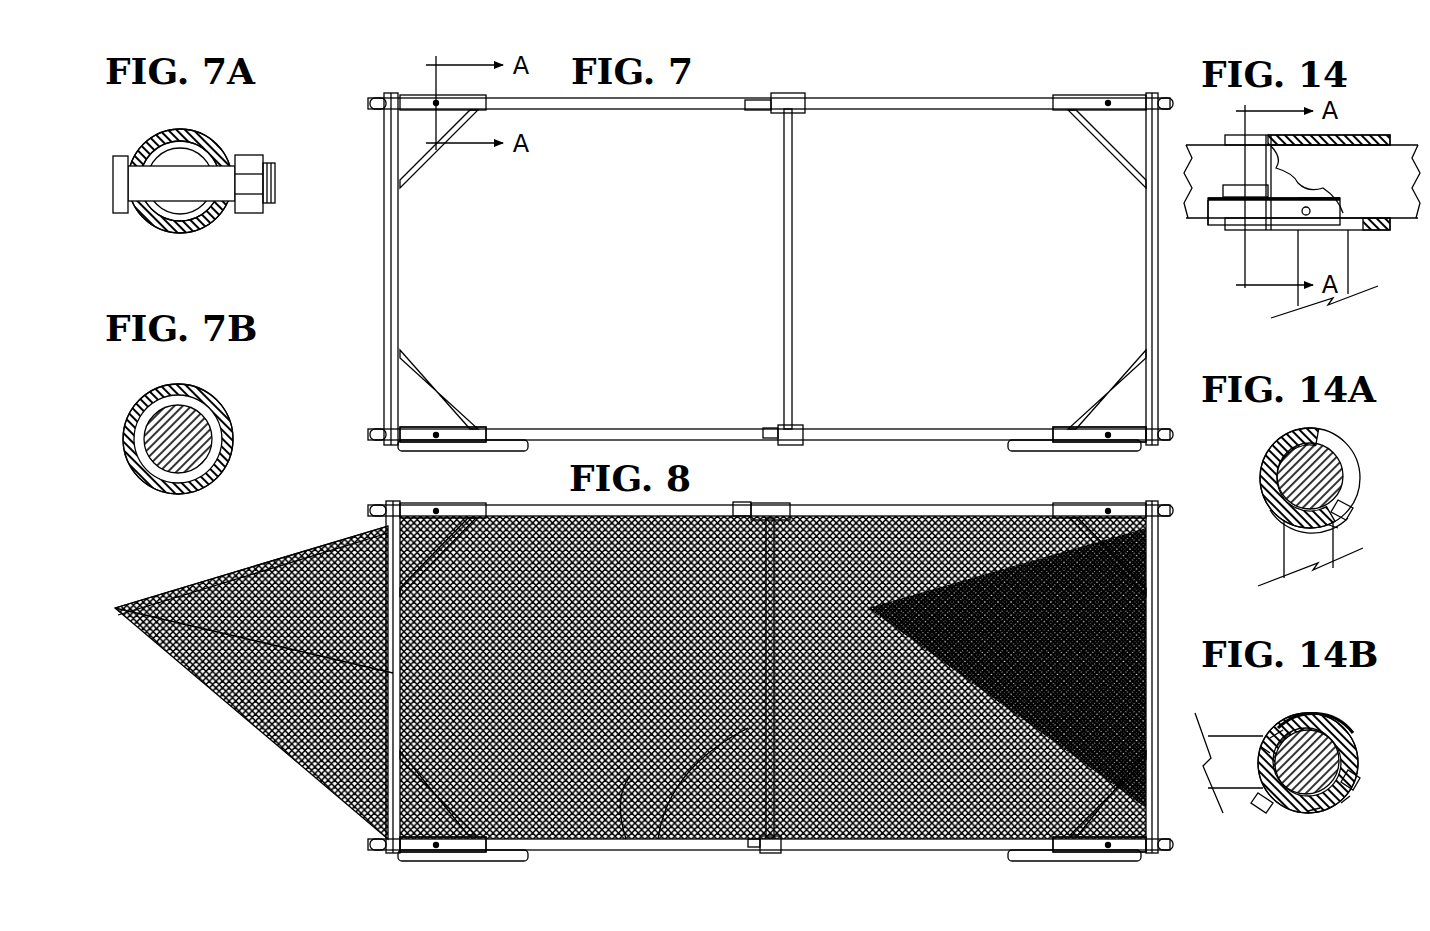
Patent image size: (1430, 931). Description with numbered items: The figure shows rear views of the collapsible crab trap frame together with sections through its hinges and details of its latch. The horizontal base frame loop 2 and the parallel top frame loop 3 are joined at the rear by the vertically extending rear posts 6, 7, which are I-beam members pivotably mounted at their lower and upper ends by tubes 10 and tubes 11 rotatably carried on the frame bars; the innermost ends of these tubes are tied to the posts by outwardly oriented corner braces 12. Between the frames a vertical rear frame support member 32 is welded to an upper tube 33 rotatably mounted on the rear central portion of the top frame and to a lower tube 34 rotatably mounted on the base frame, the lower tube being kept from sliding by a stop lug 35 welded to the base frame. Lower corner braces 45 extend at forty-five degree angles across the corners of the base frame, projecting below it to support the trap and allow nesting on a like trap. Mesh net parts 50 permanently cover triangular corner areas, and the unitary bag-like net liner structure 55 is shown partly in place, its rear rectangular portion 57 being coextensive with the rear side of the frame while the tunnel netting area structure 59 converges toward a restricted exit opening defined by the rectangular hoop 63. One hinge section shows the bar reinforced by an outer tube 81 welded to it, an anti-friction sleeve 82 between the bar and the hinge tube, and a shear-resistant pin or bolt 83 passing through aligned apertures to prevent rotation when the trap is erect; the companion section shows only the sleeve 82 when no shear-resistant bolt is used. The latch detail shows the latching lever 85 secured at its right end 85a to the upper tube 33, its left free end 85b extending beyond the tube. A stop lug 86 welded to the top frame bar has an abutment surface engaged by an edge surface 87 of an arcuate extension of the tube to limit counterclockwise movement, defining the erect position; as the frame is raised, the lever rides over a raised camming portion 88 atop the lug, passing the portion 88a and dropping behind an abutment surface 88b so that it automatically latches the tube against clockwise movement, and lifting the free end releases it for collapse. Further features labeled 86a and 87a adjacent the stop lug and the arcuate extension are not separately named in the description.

In FIG. 7, the base frame loop 2 is at (770, 434).
In FIG. 8, the base frame loop 2 is at (905, 842).
In FIG. 7, the top frame loop 3 is at (748, 90).
In FIG. 8, the top frame loop 3 is at (910, 497).
In FIG. 7A, the top frame loop 3 is at (160, 216).
In FIG. 7B, the top frame loop 3 is at (200, 466).
In FIG. 14, the top frame loop 3 is at (1212, 135).
In FIG. 14A, the top frame loop 3 is at (1325, 446).
In FIG. 14B, the top frame loop 3 is at (1340, 746).
In FIG. 7, the rear post 6 is at (390, 278).
In FIG. 8, the rear post 6 is at (362, 510).
In FIG. 7, the rear post 7 is at (1138, 222).
In FIG. 8, the rear post 7 is at (1150, 627).
In FIG. 7, the lower rear tube 10 is at (420, 420).
In FIG. 8, the lower rear tube 10 is at (400, 840).
In FIG. 7, the upper rear tube 11 is at (1063, 88).
In FIG. 8, the upper rear tube 11 is at (462, 495).
In FIG. 7A, the upper rear tube 11 is at (195, 131).
In FIG. 7B, the upper rear tube 11 is at (212, 396).
In FIG. 7, the corner brace 12 is at (425, 160).
In FIG. 8, the corner brace 12 is at (773, 676).
In FIG. 7, the rear frame support member 32 is at (786, 228).
In FIG. 8, the rear frame support member 32 is at (652, 832).
In FIG. 14, the rear frame support member 32 is at (1340, 251).
In FIG. 14A, the rear frame support member 32 is at (1278, 546).
In FIG. 14B, the rear frame support member 32 is at (1230, 783).
In FIG. 7, the upper tube 33 is at (793, 105).
In FIG. 8, the upper tube 33 is at (782, 498).
In FIG. 14, the upper tube 33 is at (1350, 127).
In FIG. 7, the lower tube 34 is at (795, 418).
In FIG. 8, the lower tube 34 is at (773, 842).
In FIG. 7, the stop lug 35 is at (762, 420).
In FIG. 8, the stop lug 35 is at (748, 842).
In FIG. 7, the lower corner brace 45 is at (435, 443).
In FIG. 8, the lower corner brace 45 is at (600, 853).
In FIG. 8, the mesh net part 50 is at (990, 560).
In FIG. 8, the crab pot liner structure 55 is at (255, 735).
In FIG. 8, the rear rectangular portion 57 is at (618, 832).
In FIG. 8, the right end tunnel area structure 59 is at (215, 692).
In FIG. 8, the rectangular hoop 63 is at (170, 582).
In FIG. 7A, the outer tube 81 is at (185, 216).
In FIG. 7A, the sleeve 82 is at (205, 211).
In FIG. 7B, the sleeve 82 is at (215, 411).
In FIG. 14A, the sleeve 82 is at (1270, 441).
In FIG. 7A, the shear-resistant pin or bolt 83 is at (150, 206).
In FIG. 7, the latching lever 85 is at (748, 102).
In FIG. 8, the latching lever 85 is at (728, 495).
In FIG. 14, the latching lever 85 is at (1280, 217).
In FIG. 14A, the latching lever 85 is at (1348, 503).
In FIG. 14B, the latching lever 85 is at (1255, 806).
In FIG. 14, the right end of latching lever 85a is at (1330, 190).
In FIG. 14, the left free end of latching lever 85b is at (1205, 212).
In FIG. 14, the stop lug 86 is at (1248, 178).
In FIG. 14A, the stop lug 86 is at (1262, 502).
In FIG. 14B, the stop lug 86 is at (1340, 779).
In FIG. 14B, the spring member end 86a is at (1258, 736).
In FIG. 14B, the edge surface 87 is at (1325, 716).
In FIG. 14B, the cap lip 87a is at (1275, 713).
In FIG. 14A, the raised camming portion 88 is at (1330, 516).
In FIG. 14B, the raised camming portion 88 is at (1320, 806).
In FIG. 14B, the top portion of camming part 88a is at (1305, 806).
In FIG. 14B, the abutment surface 88b is at (1340, 801).